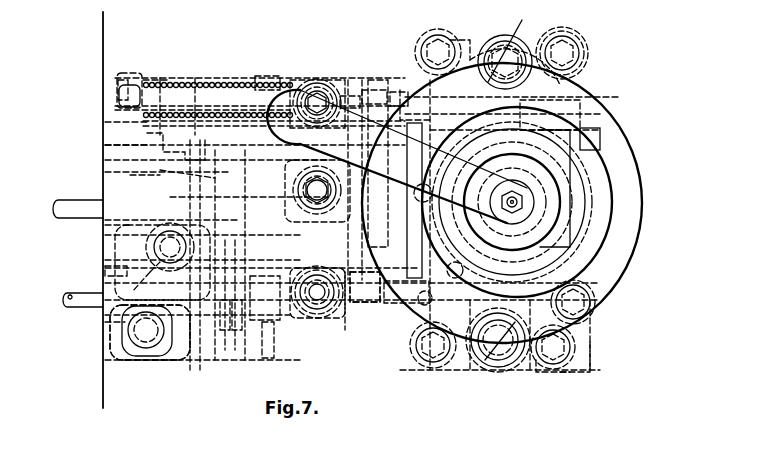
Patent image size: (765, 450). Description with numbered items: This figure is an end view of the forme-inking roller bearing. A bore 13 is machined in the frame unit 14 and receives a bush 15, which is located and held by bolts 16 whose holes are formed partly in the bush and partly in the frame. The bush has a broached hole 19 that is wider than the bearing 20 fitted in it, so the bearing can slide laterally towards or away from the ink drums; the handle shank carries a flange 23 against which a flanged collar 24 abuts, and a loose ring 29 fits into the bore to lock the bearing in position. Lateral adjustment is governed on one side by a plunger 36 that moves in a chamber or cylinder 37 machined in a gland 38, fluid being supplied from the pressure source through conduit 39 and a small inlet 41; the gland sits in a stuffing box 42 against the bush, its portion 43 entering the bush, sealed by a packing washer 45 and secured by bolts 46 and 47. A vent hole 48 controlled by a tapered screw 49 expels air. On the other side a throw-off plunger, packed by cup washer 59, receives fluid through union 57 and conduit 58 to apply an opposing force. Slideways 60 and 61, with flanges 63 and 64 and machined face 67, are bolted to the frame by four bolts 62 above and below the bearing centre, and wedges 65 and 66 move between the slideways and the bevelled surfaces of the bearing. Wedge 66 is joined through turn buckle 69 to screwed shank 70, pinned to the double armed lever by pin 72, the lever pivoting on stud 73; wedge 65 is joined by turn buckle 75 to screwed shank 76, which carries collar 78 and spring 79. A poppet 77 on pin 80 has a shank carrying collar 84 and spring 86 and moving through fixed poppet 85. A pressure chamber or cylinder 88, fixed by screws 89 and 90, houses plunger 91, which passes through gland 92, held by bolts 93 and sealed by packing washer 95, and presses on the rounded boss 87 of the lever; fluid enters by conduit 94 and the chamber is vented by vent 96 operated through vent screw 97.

The bore 13 is at (640, 196).
The frame unit 14 is at (640, 171).
The bush 15 is at (585, 106).
The bolts 16 is at (480, 386).
The broached hole 19 is at (598, 131).
The bearing 20 is at (575, 148).
The flange 23 is at (560, 207).
The collar 24 is at (593, 233).
The loose ring 29 is at (605, 265).
The plunger 36 is at (210, 197).
The chamber or cylinder 37 is at (145, 176).
The gland 38 is at (190, 178).
The conduit 39 is at (86, 213).
The inlet 41 is at (165, 298).
The stuffing box 42 is at (106, 123).
The portion of the gland 43 is at (380, 130).
The packing washer 45 is at (409, 132).
The bolt 46 is at (108, 145).
The bolt 47 is at (100, 325).
The vent hole 48 is at (130, 100).
The screw 49 is at (150, 155).
The union 57 is at (596, 310).
The conduit 58 is at (578, 372).
The cup washer 59 is at (531, 362).
The slideway 60 is at (468, 40).
The slideway 61 is at (462, 368).
The bolts 62 is at (438, 45).
The flange 63 is at (582, 50).
The flange 64 is at (430, 320).
The wedge 65 is at (545, 93).
The wedge 66 is at (422, 302).
The machined face 67 is at (500, 35).
The turn buckle 69 is at (362, 305).
The screwed shank 70 is at (345, 325).
The pin 72 is at (317, 312).
The stud 73 is at (300, 190).
The turn buckle 75 is at (362, 100).
The screwed shank 76 is at (348, 100).
The poppet 77 is at (305, 80).
The collar 78 is at (192, 80).
The spring 79 is at (220, 80).
The pin 80 is at (325, 80).
The collar 84 is at (266, 78).
The poppet 85 is at (125, 77).
The spring 86 is at (162, 80).
The rounded boss 87 is at (306, 314).
The pressure chamber or cylinder 88 is at (162, 352).
The screw 89 is at (108, 225).
The screw 90 is at (128, 342).
The plunger 91 is at (280, 327).
The gland 92 is at (240, 345).
The bolts 93 is at (278, 318).
The conduit 94 is at (87, 298).
The packing washer 95 is at (220, 332).
The vent 96 is at (145, 262).
The vent screw 97 is at (105, 270).